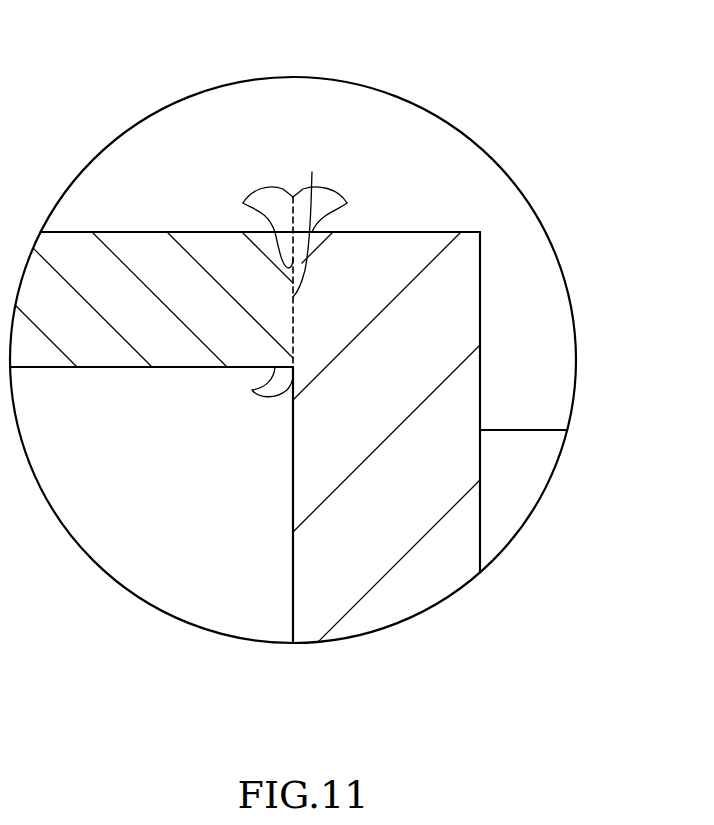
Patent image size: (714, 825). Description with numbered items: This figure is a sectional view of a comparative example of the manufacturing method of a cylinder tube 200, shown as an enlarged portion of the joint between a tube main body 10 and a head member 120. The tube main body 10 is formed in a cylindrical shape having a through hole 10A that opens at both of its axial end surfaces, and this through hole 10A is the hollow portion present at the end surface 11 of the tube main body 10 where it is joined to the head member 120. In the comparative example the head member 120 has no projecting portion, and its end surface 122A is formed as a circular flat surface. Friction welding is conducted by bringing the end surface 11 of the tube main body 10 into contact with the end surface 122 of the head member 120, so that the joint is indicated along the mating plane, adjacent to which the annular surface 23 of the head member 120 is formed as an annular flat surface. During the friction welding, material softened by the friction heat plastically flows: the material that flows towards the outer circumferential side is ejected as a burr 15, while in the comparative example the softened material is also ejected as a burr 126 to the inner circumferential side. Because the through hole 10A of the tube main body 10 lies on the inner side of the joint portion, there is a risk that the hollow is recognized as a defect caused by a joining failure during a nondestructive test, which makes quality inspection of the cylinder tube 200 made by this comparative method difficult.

The cylinder tube 200 is at (437, 167).
The tube main body 10 is at (150, 310).
The through hole 10A is at (87, 367).
The head member 120 is at (481, 263).
The end surface 122 is at (393, 232).
The end surface 122A is at (293, 480).
The burr 126 is at (263, 397).
The annular surface 23 is at (267, 183).
The burr 15 is at (281, 187).
The end surface 11 is at (312, 172).